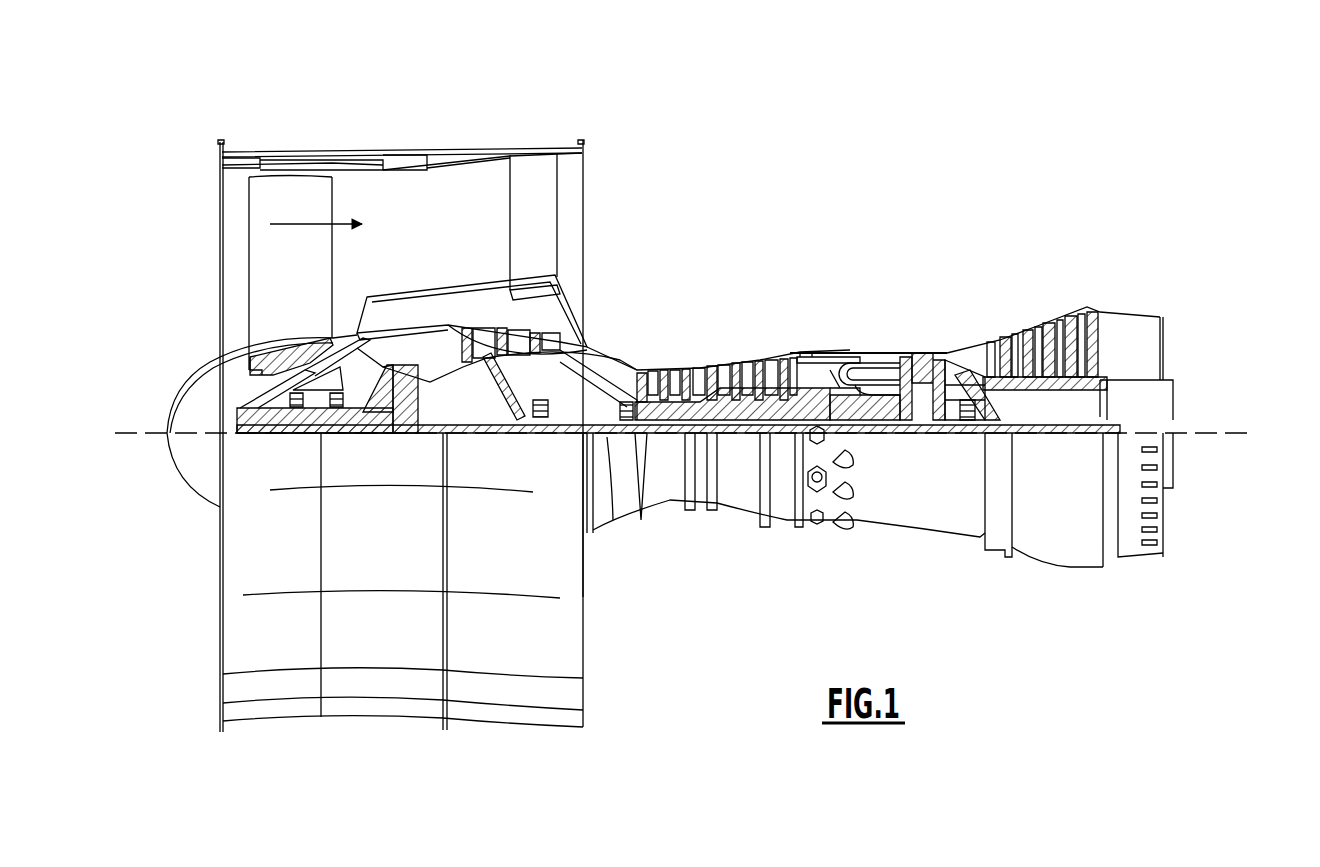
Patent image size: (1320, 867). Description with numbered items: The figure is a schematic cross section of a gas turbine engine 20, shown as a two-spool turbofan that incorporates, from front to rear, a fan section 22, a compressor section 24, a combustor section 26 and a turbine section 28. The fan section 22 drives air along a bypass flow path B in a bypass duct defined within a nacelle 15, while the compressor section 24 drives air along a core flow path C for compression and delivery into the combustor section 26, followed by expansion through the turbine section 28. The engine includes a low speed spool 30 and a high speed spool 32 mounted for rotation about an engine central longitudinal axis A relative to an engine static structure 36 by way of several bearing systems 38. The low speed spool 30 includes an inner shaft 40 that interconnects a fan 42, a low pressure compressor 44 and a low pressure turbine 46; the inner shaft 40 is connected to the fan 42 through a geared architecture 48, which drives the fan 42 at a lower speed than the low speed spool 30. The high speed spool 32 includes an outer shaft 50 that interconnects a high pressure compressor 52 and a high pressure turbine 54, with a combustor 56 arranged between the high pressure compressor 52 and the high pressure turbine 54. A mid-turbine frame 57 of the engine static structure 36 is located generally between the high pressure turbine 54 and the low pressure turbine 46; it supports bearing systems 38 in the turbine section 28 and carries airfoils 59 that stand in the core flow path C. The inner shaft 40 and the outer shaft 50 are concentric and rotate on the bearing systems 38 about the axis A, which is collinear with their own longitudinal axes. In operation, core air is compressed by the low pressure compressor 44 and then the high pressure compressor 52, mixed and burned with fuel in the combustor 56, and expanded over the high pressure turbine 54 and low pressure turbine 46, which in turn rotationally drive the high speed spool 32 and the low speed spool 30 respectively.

The nacelle 15 is at (404, 150).
The gas turbine engine 20 is at (862, 198).
The fan section 22 is at (330, 140).
The compressor section 24 is at (633, 335).
The combustor section 26 is at (856, 322).
The turbine section 28 is at (1006, 290).
The low speed spool 30 is at (743, 448).
The high speed spool 32 is at (780, 395).
The engine static structure 36 is at (782, 525).
The bearing systems 38 is at (540, 418).
The inner shaft 40 is at (607, 437).
The fan 42 is at (308, 276).
The low pressure compressor 44 is at (505, 343).
The low pressure turbine 46 is at (1050, 317).
The geared architecture 48 is at (408, 420).
The outer shaft 50 is at (863, 430).
The high pressure compressor 52 is at (711, 370).
The high pressure turbine 54 is at (918, 362).
The combustor 56 is at (860, 375).
The mid-turbine frame 57 is at (968, 345).
The airfoils 59 is at (985, 395).
The engine central longitudinal axis A is at (1258, 433).
The bypass flow path B is at (308, 224).
The core flow path C is at (398, 331).